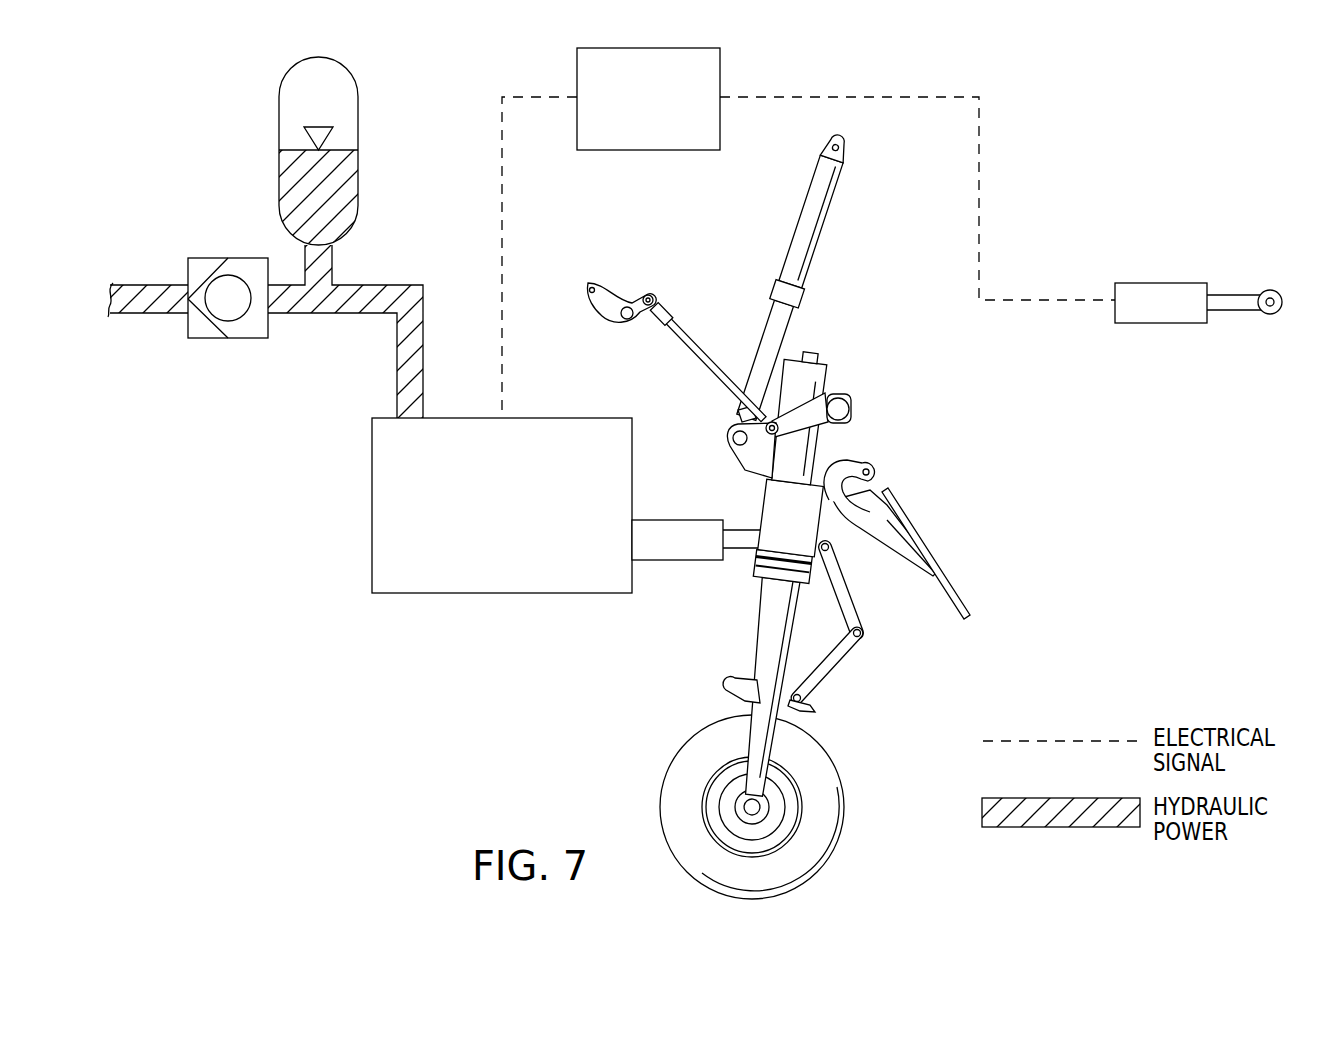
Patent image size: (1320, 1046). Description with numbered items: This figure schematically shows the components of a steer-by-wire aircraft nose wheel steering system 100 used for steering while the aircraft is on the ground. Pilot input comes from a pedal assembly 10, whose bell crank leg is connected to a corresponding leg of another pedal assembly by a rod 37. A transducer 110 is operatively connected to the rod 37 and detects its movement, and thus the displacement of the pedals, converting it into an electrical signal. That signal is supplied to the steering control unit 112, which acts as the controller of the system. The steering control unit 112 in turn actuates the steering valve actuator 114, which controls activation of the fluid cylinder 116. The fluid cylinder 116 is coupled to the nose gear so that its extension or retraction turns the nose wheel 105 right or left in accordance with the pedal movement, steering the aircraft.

The pedal assembly 10 is at (778, 515).
The rod 37 is at (1237, 294).
The aircraft nose wheel steering system 100 is at (456, 702).
The nose wheel 105 is at (843, 796).
The transducer 110 is at (1160, 323).
The steering control unit 112 is at (720, 59).
The steering valve actuator 114 is at (582, 593).
The fluid cylinder 116 is at (682, 560).